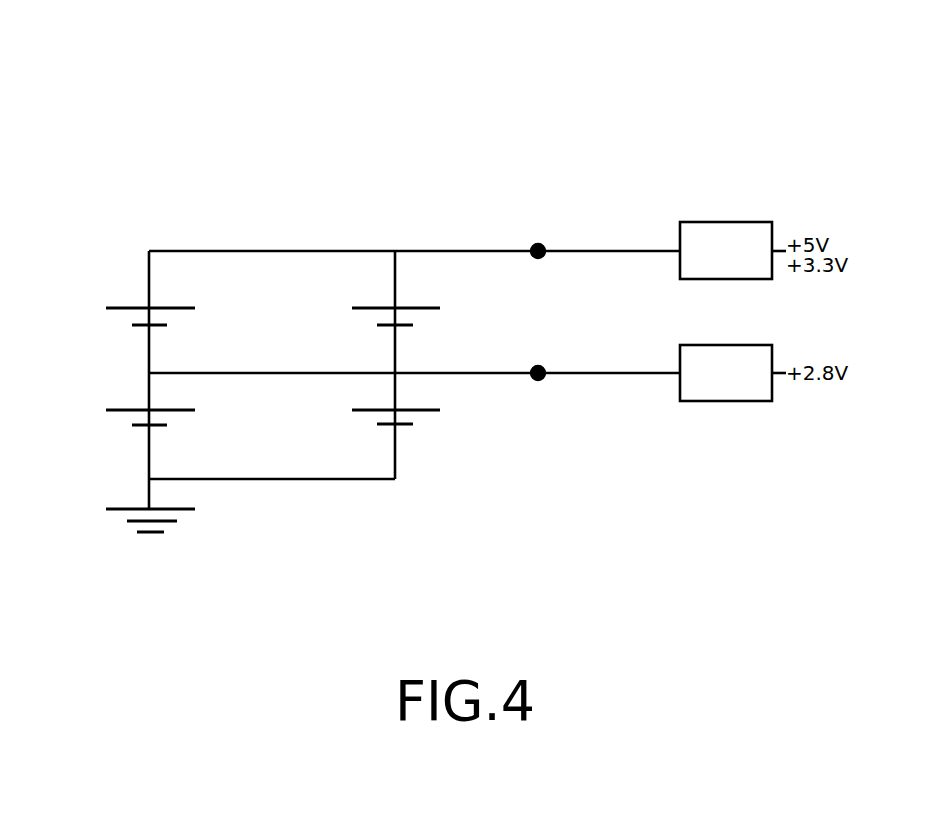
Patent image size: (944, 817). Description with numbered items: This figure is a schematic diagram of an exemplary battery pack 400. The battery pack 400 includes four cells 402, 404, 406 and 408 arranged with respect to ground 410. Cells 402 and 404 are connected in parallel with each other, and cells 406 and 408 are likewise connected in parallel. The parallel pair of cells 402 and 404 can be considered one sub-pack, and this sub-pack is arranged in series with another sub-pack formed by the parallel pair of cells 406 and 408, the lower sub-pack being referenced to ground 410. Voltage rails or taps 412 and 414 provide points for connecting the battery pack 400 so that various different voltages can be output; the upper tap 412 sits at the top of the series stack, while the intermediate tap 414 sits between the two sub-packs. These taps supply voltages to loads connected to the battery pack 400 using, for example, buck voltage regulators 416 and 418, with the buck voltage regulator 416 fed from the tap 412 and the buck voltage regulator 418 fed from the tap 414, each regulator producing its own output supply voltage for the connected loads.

The battery pack 400 is at (211, 32).
The cell 402 is at (110, 320).
The cell 404 is at (438, 314).
The cell 406 is at (106, 426).
The cell 408 is at (436, 424).
The ground 410 is at (114, 535).
The voltage rail or tap 412 is at (540, 246).
The voltage rail or tap 414 is at (541, 368).
The buck voltage regulator 416 is at (702, 222).
The buck voltage regulator 418 is at (699, 345).